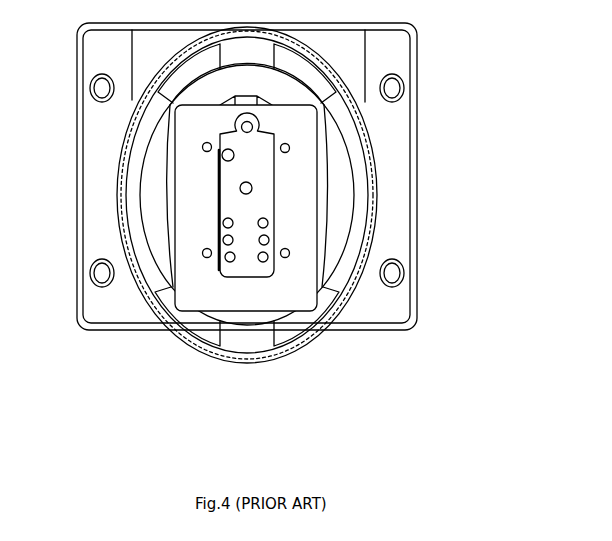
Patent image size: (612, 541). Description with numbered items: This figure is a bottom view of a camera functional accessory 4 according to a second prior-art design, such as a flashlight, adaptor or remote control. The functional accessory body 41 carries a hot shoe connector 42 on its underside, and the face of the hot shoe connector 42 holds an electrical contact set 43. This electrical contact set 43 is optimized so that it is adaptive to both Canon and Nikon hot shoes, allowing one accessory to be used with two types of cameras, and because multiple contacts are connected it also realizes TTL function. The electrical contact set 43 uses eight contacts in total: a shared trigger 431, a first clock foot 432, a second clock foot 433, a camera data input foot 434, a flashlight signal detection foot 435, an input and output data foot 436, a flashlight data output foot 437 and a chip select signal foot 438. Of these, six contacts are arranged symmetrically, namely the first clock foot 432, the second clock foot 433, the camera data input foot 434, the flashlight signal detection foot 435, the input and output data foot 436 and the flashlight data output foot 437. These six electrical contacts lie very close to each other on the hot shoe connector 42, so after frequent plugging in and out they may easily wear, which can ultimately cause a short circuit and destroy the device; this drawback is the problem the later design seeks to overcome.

The functional accessory 4 is at (264, 262).
The functional accessory body 41 is at (265, 98).
The hot shoe connector 42 is at (305, 127).
The electrical contact set 43 is at (253, 186).
The shared trigger 431 is at (253, 188).
The first clock foot 432 is at (265, 223).
The second clock foot 433 is at (265, 241).
The camera data input foot 434 is at (265, 258).
The flashlight signal detection foot 435 is at (231, 261).
The input and output data foot 436 is at (227, 240).
The flashlight data output foot 437 is at (227, 222).
The chip select signal foot 438 is at (227, 155).